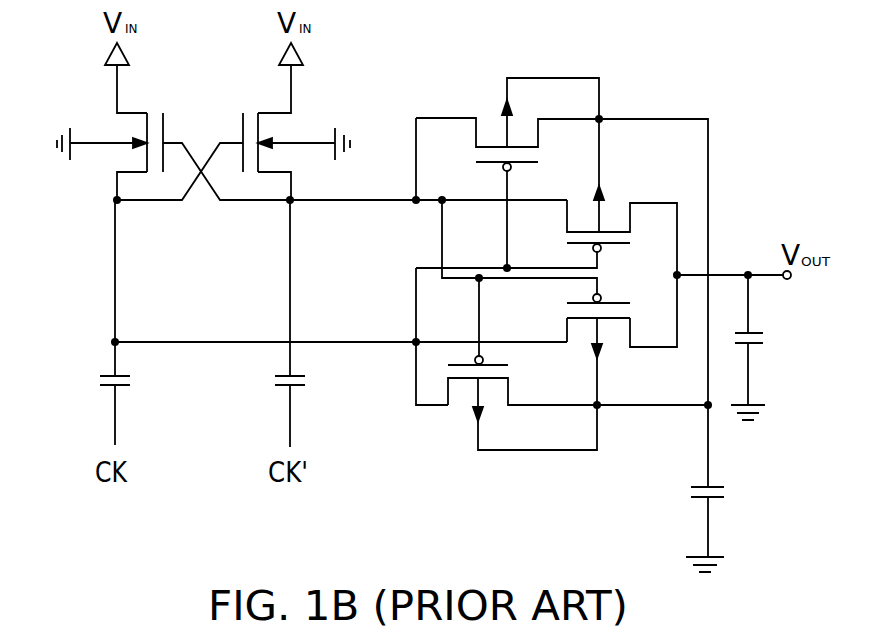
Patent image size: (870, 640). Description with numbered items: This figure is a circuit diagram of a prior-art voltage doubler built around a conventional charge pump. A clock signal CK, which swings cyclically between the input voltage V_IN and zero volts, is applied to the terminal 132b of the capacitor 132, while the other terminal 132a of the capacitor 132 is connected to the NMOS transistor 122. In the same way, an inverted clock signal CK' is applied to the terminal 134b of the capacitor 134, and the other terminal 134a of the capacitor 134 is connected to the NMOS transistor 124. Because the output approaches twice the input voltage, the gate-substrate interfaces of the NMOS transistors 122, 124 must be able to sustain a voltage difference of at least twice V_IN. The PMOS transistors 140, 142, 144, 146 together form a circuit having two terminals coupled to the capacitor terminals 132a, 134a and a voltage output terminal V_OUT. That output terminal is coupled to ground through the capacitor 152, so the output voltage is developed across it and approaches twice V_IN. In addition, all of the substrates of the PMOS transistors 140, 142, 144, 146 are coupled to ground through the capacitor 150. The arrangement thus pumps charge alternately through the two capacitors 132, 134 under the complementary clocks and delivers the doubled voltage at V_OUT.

The NMOS transistor 122 is at (182, 125).
The NMOS transistor 124 is at (235, 128).
The capacitor 132 is at (134, 380).
The terminal 132a is at (113, 290).
The terminal 132b is at (113, 415).
The capacitor 134 is at (269, 380).
The terminal 134a is at (292, 288).
The terminal 134b is at (292, 415).
The PMOS transistor 140 is at (490, 113).
The PMOS transistor 142 is at (614, 196).
The PMOS transistor 144 is at (462, 404).
The PMOS transistor 146 is at (613, 348).
The capacitor 150 is at (725, 492).
The capacitor 152 is at (773, 340).